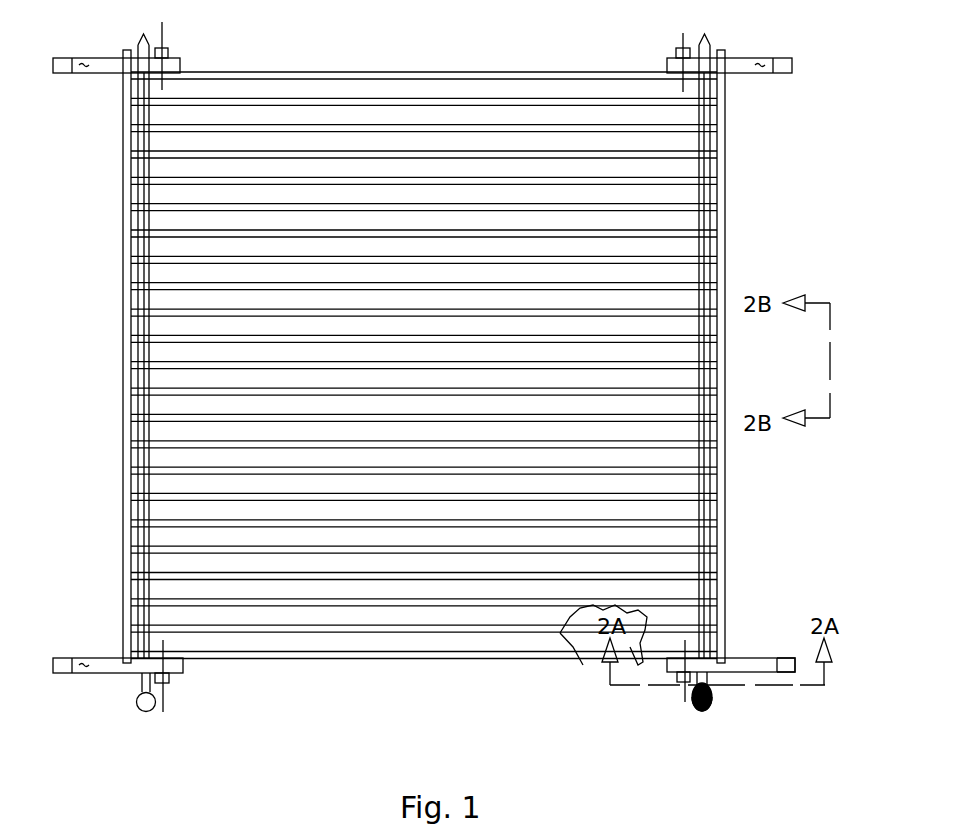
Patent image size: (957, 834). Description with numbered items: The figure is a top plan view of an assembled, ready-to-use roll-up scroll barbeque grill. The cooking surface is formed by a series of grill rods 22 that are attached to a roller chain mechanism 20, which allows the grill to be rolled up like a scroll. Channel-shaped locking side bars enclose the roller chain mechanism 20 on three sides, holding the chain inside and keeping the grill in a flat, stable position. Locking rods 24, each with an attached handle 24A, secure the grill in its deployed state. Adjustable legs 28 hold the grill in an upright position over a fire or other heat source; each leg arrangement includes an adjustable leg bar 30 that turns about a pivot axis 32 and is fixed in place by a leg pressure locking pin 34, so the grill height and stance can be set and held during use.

The roller chain mechanism 20 is at (727, 185).
The grill rods 22 is at (498, 72).
The locking rods 24 is at (710, 690).
The handles 24A is at (700, 712).
The adjustable legs 28 is at (745, 657).
The adjustable leg bar 30 is at (788, 657).
The pivot axis 32 is at (683, 686).
The leg pressure locking pin 34 is at (767, 667).